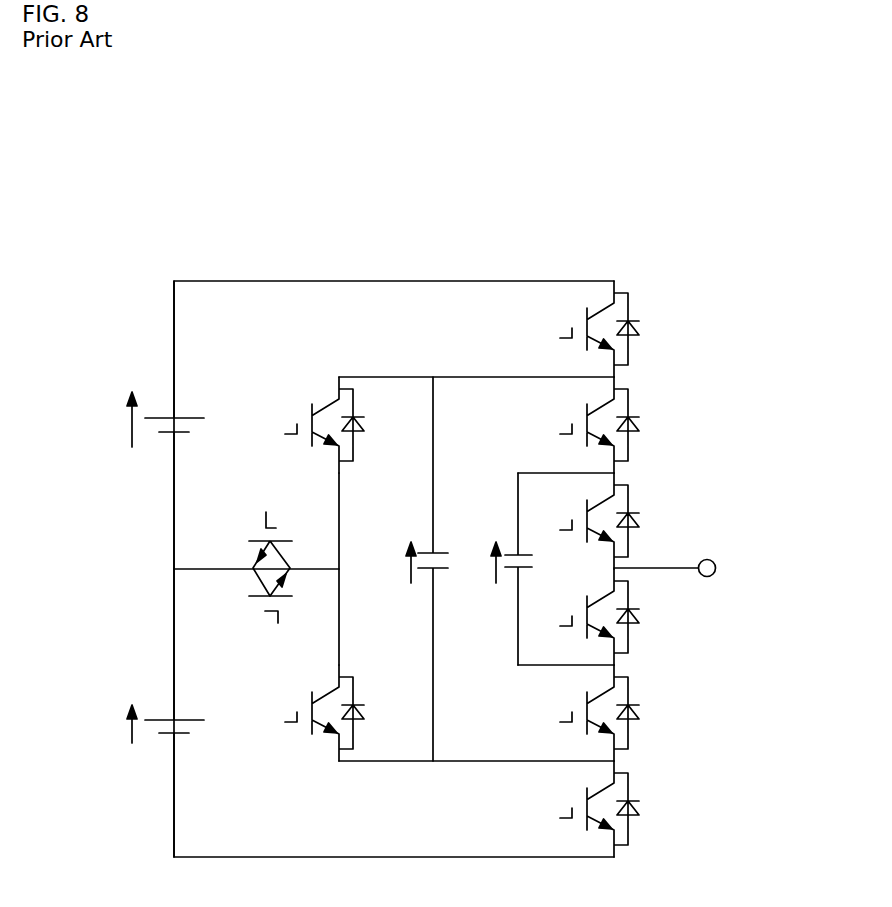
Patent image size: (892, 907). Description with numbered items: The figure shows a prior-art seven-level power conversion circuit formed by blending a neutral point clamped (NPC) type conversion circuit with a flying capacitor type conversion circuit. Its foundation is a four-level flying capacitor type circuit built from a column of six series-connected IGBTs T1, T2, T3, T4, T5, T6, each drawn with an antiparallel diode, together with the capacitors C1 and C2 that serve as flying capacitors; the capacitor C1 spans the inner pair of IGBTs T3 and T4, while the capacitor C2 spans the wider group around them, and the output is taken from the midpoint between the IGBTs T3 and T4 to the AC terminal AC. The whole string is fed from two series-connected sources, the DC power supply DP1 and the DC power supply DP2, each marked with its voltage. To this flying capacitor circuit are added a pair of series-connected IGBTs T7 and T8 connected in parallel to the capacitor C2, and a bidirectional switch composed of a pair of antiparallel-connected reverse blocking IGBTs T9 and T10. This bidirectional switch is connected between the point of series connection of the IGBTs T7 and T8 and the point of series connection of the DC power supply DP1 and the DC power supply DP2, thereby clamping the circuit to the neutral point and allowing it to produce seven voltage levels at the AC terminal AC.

The IGBT T1 is at (622, 329).
The IGBT T2 is at (622, 425).
The IGBT T3 is at (622, 521).
The IGBT T4 is at (622, 617).
The IGBT T5 is at (622, 713).
The IGBT T6 is at (622, 809).
The IGBT T7 is at (344, 429).
The IGBT T8 is at (344, 713).
The reverse blocking IGBT T9 is at (271, 541).
The reverse blocking IGBT T10 is at (263, 615).
The capacitor C1 is at (492, 569).
The capacitor C2 is at (396, 569).
The DC power supply DP1 is at (144, 425).
The DC power supply DP2 is at (144, 713).
The AC terminal AC is at (730, 569).